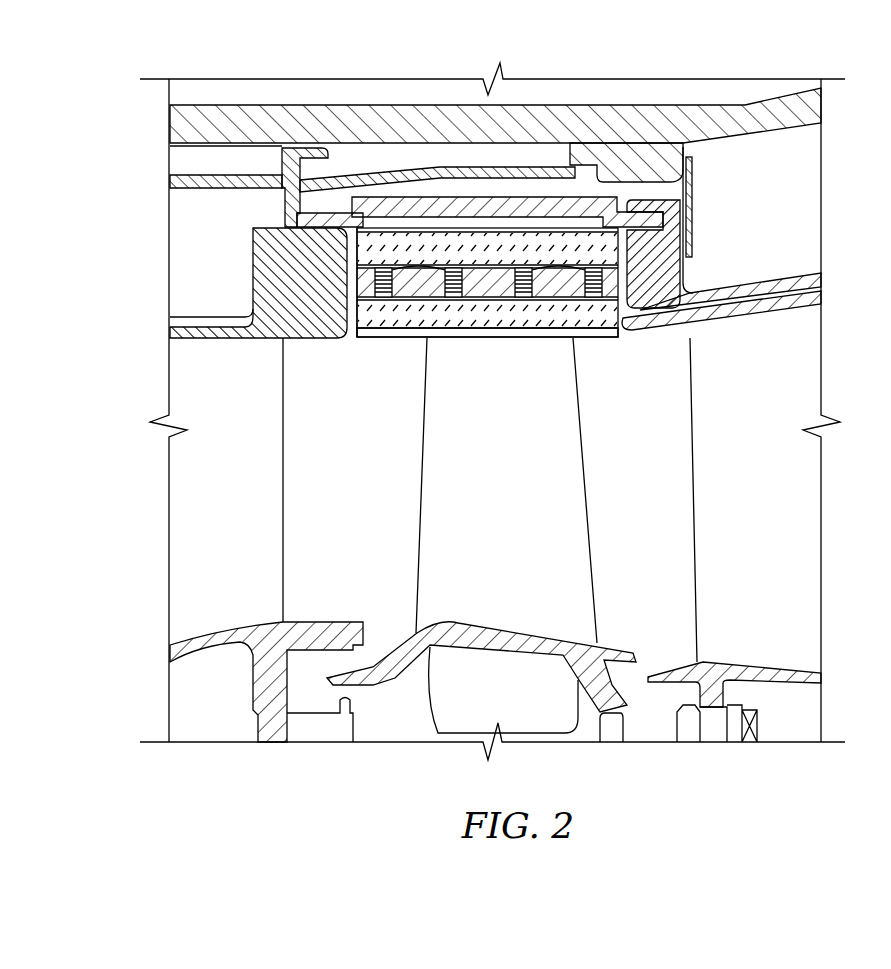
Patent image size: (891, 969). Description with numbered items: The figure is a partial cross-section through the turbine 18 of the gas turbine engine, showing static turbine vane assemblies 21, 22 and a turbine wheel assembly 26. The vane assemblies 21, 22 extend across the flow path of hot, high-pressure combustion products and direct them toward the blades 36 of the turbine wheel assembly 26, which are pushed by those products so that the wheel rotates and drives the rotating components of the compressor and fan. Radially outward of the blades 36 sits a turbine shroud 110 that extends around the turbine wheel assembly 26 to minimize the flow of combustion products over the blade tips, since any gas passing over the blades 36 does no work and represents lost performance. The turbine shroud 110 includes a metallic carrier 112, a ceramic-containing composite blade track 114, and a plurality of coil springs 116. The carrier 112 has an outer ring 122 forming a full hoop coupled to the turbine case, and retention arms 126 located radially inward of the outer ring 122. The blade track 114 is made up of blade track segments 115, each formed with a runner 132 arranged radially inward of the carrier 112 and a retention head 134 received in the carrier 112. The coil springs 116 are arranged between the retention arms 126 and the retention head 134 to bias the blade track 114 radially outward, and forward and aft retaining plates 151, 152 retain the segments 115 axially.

The turbine 18 is at (749, 99).
The static turbine vane assembly 21 is at (188, 545).
The static turbine vane assembly 22 is at (801, 566).
The turbine wheel assembly 26 is at (388, 574).
The blades 36 is at (465, 505).
The turbine shroud 110 is at (622, 340).
The carrier 112 is at (683, 262).
The blade track 114 is at (601, 339).
The blade track segments 115 is at (578, 339).
The coil springs 116 is at (374, 291).
The outer ring 122 is at (485, 190).
The retention arms 126 is at (356, 286).
The runner 132 is at (522, 320).
The retention head 134 is at (542, 244).
The forward retaining plate 151 is at (250, 264).
The aft retaining plate 152 is at (694, 261).